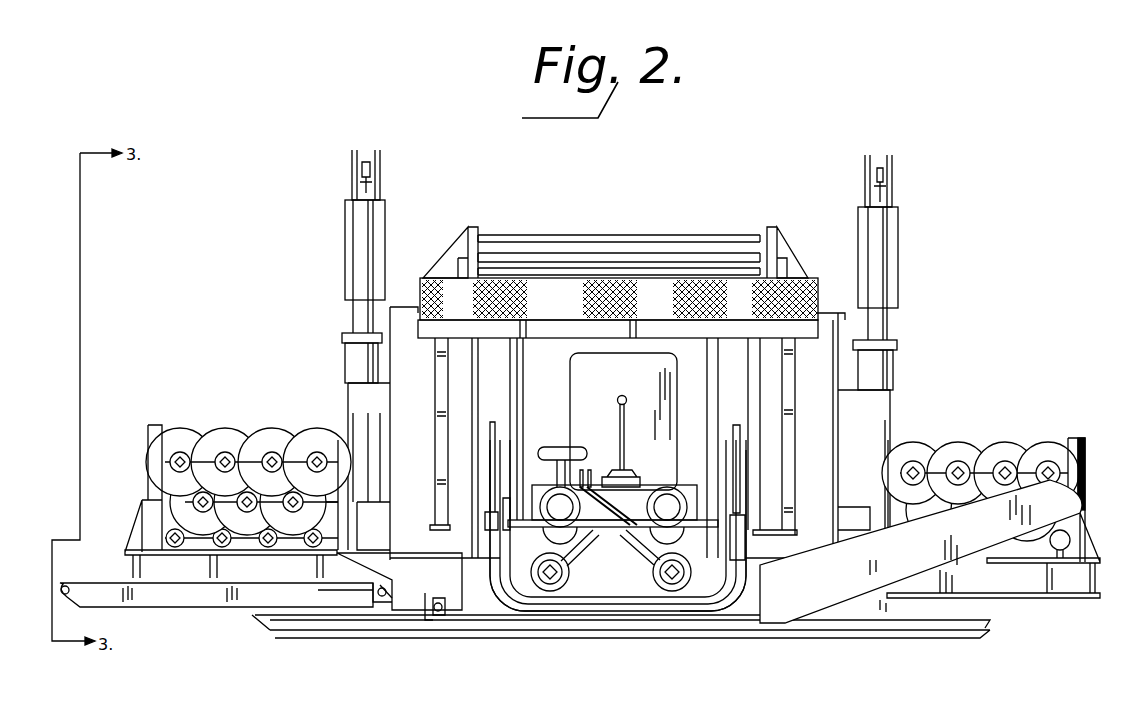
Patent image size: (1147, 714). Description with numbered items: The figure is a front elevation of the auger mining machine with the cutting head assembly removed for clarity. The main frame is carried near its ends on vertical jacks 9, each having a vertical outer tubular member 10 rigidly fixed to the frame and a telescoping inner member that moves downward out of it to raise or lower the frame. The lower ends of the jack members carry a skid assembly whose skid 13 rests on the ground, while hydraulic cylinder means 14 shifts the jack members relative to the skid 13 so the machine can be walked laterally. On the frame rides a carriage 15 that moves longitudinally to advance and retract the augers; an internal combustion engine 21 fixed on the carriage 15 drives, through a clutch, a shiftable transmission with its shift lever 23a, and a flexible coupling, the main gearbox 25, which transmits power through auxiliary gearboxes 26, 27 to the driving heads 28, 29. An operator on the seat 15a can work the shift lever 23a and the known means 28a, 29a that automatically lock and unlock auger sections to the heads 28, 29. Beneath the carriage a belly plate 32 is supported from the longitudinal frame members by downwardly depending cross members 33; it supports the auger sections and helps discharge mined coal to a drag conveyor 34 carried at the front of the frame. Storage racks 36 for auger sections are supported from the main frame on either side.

The vertical jack 9 is at (384, 367).
The vertical outer tubular member 10 is at (630, 393).
The skid 13 is at (907, 640).
The hydraulic cylinder means 14 is at (358, 593).
The carriage 15 is at (702, 512).
The seat 15a is at (552, 446).
The internal combustion engine 21 is at (590, 374).
The shift lever 23a is at (625, 384).
The main gearbox 25 is at (624, 428).
The auxiliary gearbox 26 is at (546, 493).
The auxiliary gearbox 27 is at (650, 512).
The driving head 28 is at (566, 594).
The auger section locking and unlocking means 28a is at (598, 522).
The driving head 29 is at (658, 583).
The auger section locking and unlocking means 29a is at (604, 538).
The belly plate 32 is at (618, 563).
The downwardly depending cross member 33 is at (693, 608).
The drag conveyor 34 is at (947, 556).
The storage rack 36 is at (1085, 462).